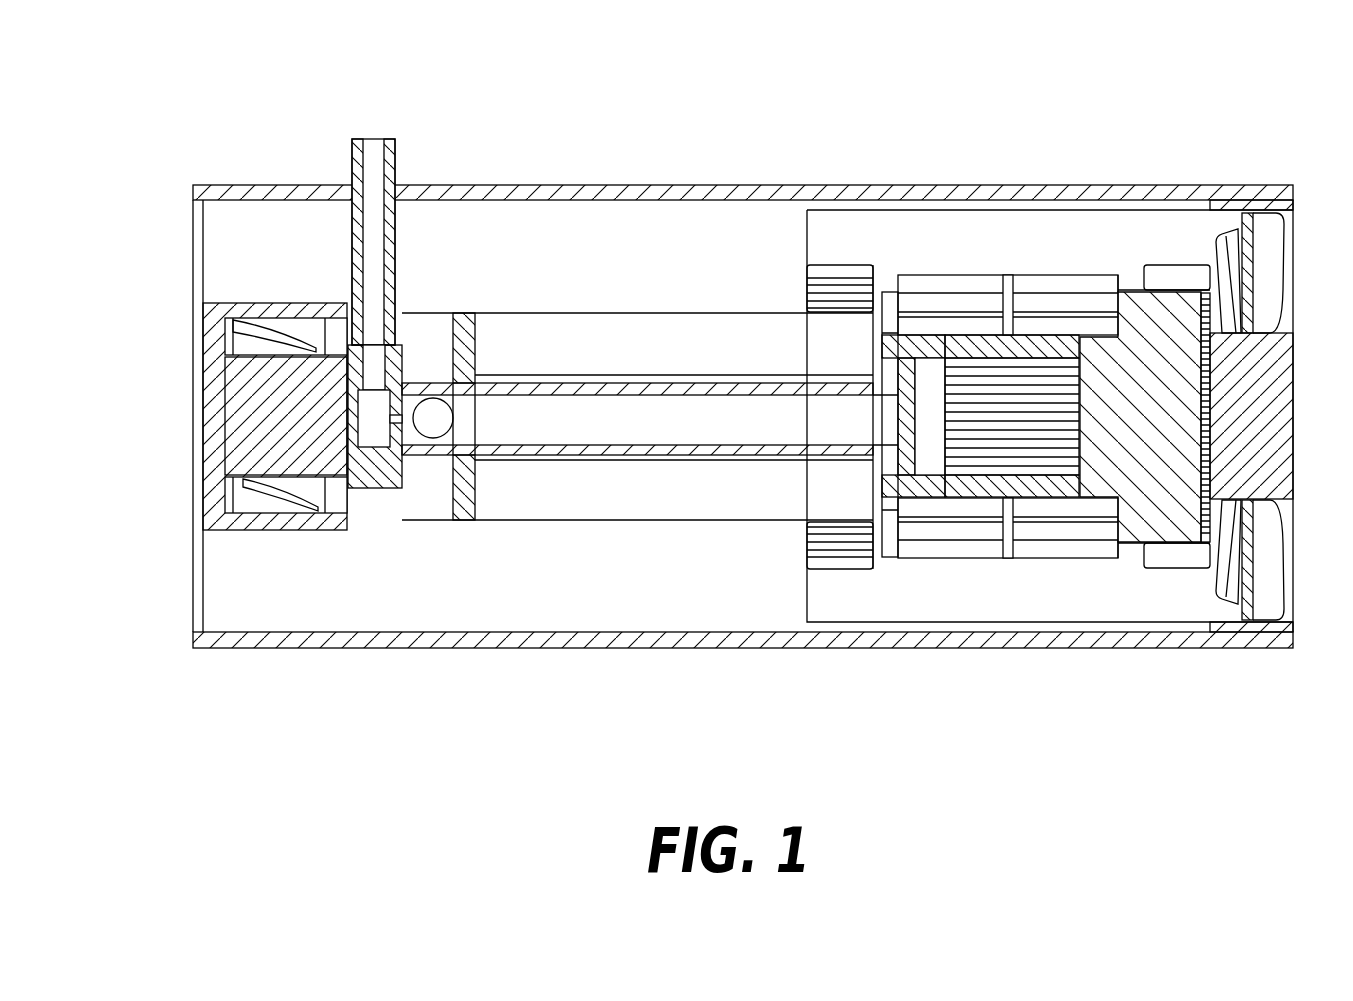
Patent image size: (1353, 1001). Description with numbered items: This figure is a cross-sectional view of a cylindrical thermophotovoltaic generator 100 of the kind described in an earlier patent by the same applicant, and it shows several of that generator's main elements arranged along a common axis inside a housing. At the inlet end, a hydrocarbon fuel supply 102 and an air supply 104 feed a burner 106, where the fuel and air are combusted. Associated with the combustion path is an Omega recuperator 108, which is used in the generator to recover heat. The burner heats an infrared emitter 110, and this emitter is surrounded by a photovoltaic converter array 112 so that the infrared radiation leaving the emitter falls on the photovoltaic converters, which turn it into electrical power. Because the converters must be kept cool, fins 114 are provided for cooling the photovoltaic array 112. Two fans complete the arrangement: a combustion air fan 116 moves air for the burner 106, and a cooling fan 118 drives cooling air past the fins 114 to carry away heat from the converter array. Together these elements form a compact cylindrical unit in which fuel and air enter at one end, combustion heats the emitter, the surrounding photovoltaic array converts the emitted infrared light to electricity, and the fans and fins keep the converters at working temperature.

The generator 100 is at (614, 98).
The hydrocarbon fuel supply 102 is at (395, 152).
The air supply 104 is at (422, 503).
The burner 106 is at (452, 438).
The Omega recuperator 108 is at (576, 480).
The infrared emitter 110 is at (977, 444).
The photovoltaic converter array 112 is at (1001, 246).
The fins 114 is at (1095, 622).
The combustion air fan 116 is at (213, 530).
The cooling fan 118 is at (1242, 662).